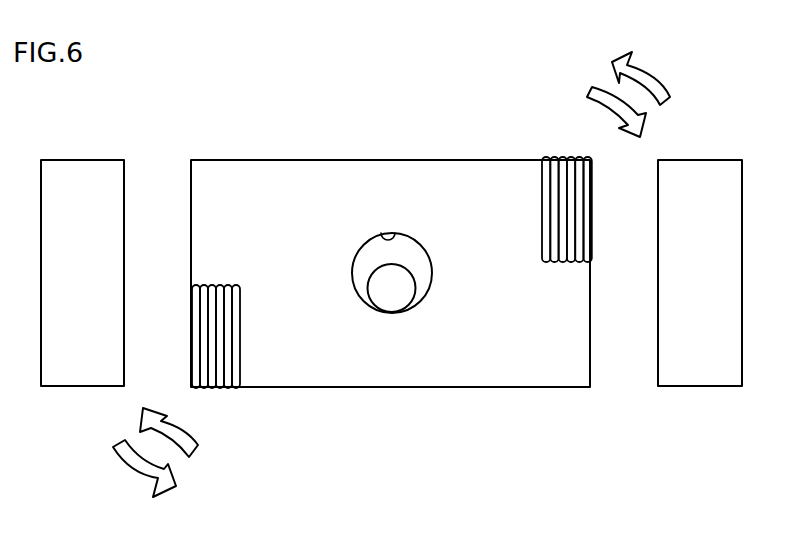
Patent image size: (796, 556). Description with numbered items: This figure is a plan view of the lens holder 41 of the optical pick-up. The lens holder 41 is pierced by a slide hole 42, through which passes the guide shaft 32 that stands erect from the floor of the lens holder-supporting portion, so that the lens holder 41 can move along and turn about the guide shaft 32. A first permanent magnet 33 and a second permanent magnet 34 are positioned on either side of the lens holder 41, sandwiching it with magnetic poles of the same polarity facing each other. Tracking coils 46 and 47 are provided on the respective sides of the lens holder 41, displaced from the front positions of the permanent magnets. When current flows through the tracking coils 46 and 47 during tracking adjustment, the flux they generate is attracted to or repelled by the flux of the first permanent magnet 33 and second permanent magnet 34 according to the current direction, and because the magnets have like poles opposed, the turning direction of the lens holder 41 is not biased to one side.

The lens holder 41 is at (312, 132).
The slide hole 42 is at (398, 234).
The guide shaft 32 is at (390, 300).
The first permanent magnet 33 is at (80, 368).
The second permanent magnet 34 is at (700, 372).
The tracking coil 46 is at (222, 388).
The tracking coil 47 is at (562, 159).